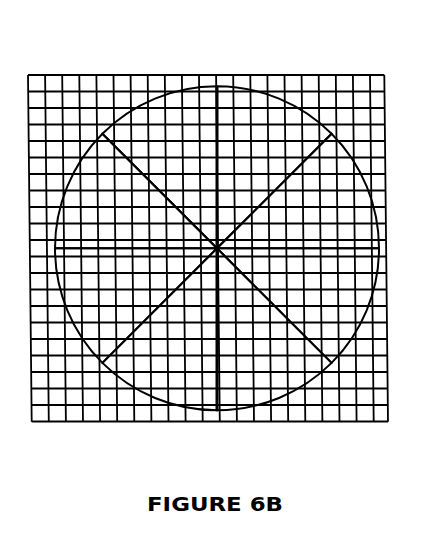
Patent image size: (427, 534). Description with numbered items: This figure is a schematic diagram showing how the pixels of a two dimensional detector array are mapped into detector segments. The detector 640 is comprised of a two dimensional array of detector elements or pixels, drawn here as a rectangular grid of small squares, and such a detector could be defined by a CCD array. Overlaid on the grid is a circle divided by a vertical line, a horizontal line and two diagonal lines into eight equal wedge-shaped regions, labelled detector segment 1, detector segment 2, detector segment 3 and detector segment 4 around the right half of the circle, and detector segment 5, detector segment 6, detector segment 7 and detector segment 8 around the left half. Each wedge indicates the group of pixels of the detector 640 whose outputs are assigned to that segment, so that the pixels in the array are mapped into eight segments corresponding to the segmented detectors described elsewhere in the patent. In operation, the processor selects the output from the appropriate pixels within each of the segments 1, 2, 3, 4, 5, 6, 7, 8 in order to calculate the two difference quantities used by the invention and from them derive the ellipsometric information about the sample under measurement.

The detector 640 is at (186, 75).
The detector segment 1 is at (274, 167).
The detector segment 2 is at (298, 191).
The detector segment 3 is at (298, 305).
The detector segment 4 is at (274, 329).
The detector segment 5 is at (159, 329).
The detector segment 6 is at (136, 305).
The detector segment 7 is at (136, 191).
The detector segment 8 is at (159, 167).